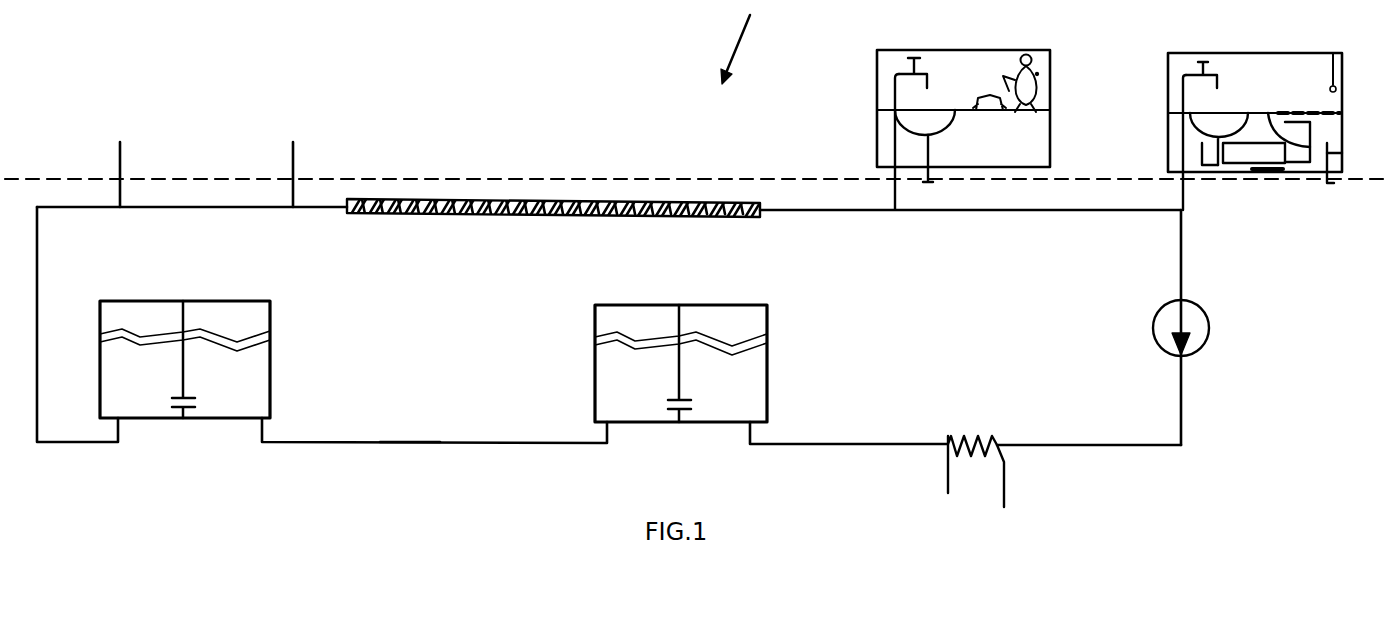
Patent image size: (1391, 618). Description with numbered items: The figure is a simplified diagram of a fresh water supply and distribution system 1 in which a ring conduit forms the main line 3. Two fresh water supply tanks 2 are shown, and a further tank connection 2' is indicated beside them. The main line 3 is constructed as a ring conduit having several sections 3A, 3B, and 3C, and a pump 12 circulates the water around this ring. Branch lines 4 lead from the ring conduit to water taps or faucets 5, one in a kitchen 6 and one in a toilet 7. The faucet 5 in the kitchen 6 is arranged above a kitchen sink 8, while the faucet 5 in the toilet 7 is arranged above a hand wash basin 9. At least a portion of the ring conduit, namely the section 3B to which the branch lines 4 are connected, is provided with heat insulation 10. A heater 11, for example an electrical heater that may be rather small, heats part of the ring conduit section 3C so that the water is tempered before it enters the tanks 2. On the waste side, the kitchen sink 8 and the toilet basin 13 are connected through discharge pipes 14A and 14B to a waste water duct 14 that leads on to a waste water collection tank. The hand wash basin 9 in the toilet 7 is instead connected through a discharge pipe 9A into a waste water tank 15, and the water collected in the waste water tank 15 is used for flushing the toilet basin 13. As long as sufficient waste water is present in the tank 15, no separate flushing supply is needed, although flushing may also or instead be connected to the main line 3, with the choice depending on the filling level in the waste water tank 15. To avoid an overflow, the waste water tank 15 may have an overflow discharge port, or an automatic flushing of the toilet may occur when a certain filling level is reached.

The fresh water supply and distribution system 1 is at (758, 6).
The fresh water supply tank 2 is at (433, 398).
The second aquarium tank connection 2' is at (410, 468).
The main line 3 is at (1183, 268).
The ring conduit section 3A is at (368, 440).
The ring conduit section 3B is at (775, 212).
The ring conduit section 3C is at (1072, 445).
The branch line 4 is at (123, 157).
The faucet 5 is at (928, 88).
The kitchen 6 is at (998, 50).
The toilet 7 is at (1293, 53).
The kitchen sink 8 is at (955, 121).
The hand wash basin 9 is at (1230, 120).
The discharge pipe 9A is at (1200, 152).
The heat insulation 10 is at (600, 206).
The heater 11 is at (1006, 483).
The pump 12 is at (1205, 343).
The toilet basin 13 is at (1342, 120).
The waste water duct 14 is at (1350, 190).
The discharge pipe 14A is at (933, 160).
The discharge pipe 14B is at (1342, 153).
The waste water tank 15 is at (1275, 172).